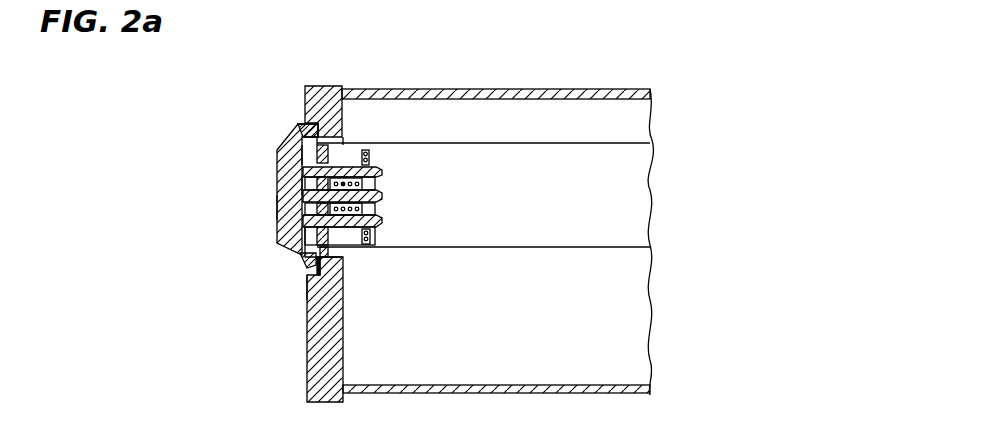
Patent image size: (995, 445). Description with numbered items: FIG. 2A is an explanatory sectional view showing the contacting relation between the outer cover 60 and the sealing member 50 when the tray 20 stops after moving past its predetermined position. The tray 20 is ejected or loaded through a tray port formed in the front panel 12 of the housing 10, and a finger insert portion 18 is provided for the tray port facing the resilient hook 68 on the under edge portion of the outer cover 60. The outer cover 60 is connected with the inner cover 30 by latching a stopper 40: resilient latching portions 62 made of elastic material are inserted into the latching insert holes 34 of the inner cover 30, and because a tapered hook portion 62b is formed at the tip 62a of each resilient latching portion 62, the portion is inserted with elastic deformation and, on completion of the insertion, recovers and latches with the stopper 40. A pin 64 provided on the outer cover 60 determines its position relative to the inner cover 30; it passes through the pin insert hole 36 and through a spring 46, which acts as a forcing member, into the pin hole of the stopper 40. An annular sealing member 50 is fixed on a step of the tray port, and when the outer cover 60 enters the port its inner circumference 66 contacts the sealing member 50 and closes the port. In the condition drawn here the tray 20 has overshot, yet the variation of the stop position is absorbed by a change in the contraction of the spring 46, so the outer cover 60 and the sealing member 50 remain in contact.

The housing 10 is at (488, 89).
The front panel 12 is at (306, 390).
The finger insert portion 18 is at (304, 288).
The tray 20 is at (570, 150).
The inner cover 30 is at (280, 152).
The latching insert holes 34 is at (302, 156).
The pin insert hole 36 is at (302, 184).
The stopper 40 is at (360, 258).
The spring 46 is at (338, 166).
The sealing member 50 is at (320, 86).
The outer cover 60 is at (286, 204).
The resilient latching portion 62 is at (381, 186).
The tip 62a is at (386, 223).
The hook portion 62b is at (370, 160).
The pin 64 is at (382, 228).
The inner circumference 66 is at (312, 132).
The resilient hook 68 is at (302, 278).